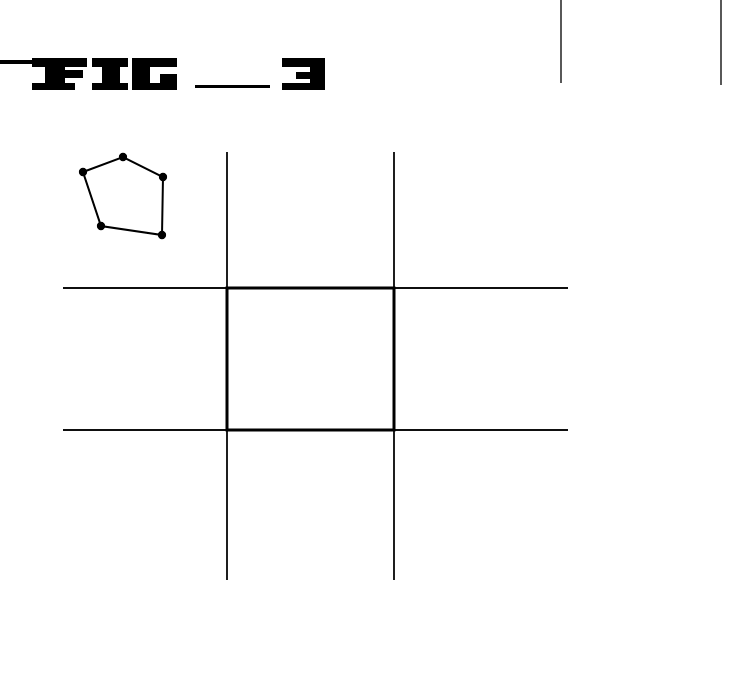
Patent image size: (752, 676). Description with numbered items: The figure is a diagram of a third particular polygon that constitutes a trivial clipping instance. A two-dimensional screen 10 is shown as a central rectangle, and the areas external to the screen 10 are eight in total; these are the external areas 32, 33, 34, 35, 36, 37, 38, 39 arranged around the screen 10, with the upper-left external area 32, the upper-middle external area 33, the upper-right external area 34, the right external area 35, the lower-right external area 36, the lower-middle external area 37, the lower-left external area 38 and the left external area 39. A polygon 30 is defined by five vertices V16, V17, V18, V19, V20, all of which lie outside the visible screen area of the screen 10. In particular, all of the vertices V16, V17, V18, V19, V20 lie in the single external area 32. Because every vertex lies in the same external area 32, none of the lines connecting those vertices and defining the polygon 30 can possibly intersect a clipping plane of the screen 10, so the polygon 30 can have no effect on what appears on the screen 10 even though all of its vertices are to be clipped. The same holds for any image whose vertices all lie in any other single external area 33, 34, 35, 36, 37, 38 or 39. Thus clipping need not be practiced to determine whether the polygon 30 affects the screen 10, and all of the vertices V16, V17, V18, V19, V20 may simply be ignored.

The screen 10 is at (318, 364).
The polygon 30 is at (140, 206).
The external area 32 is at (170, 128).
The external area 33 is at (302, 144).
The external area 34 is at (474, 206).
The external area 35 is at (480, 352).
The external area 36 is at (474, 489).
The external area 37 is at (313, 491).
The external area 38 is at (157, 500).
The external area 39 is at (153, 355).
The vertex V16 is at (68, 164).
The vertex V17 is at (128, 143).
The vertex V18 is at (178, 173).
The vertex V19 is at (178, 236).
The vertex V20 is at (91, 236).